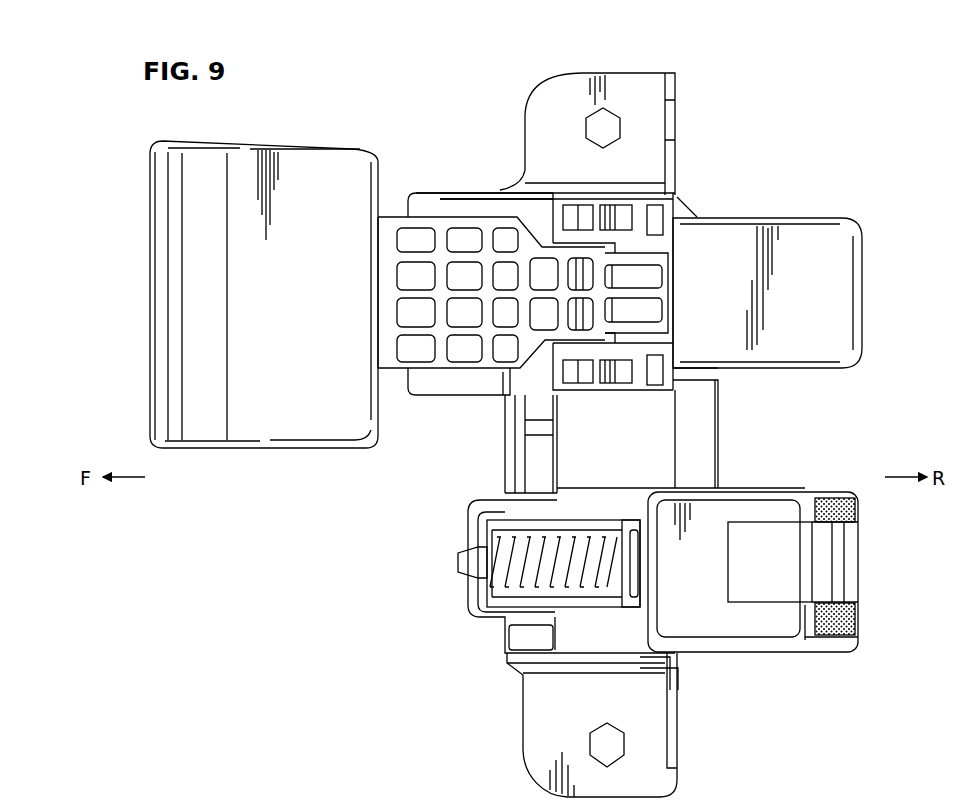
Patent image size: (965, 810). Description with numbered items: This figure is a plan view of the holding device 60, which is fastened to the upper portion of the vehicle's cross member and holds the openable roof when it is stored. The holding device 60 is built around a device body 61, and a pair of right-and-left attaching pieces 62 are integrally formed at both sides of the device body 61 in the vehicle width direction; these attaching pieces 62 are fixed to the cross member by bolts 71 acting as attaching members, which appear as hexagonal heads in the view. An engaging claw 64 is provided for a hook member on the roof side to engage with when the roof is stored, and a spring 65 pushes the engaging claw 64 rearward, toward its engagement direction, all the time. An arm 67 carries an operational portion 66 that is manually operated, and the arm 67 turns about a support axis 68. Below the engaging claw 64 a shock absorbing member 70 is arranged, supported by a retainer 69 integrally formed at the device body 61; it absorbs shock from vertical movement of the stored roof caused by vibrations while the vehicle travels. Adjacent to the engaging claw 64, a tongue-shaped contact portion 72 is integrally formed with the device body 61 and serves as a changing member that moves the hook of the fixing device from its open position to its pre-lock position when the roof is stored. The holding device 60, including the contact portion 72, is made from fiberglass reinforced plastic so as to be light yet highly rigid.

The holding device 60 is at (591, 423).
The device body 61 is at (491, 190).
The attaching pieces 62 is at (577, 418).
The engaging claw 64 is at (769, 591).
The spring 65 is at (510, 565).
The operational portion 66 is at (292, 296).
The arm 67 is at (466, 372).
The support axis 68 is at (618, 281).
The retainer 69 is at (833, 642).
The shock absorbing member 70 is at (850, 619).
The bolts 71 is at (595, 143).
The contact portion 72 is at (835, 245).